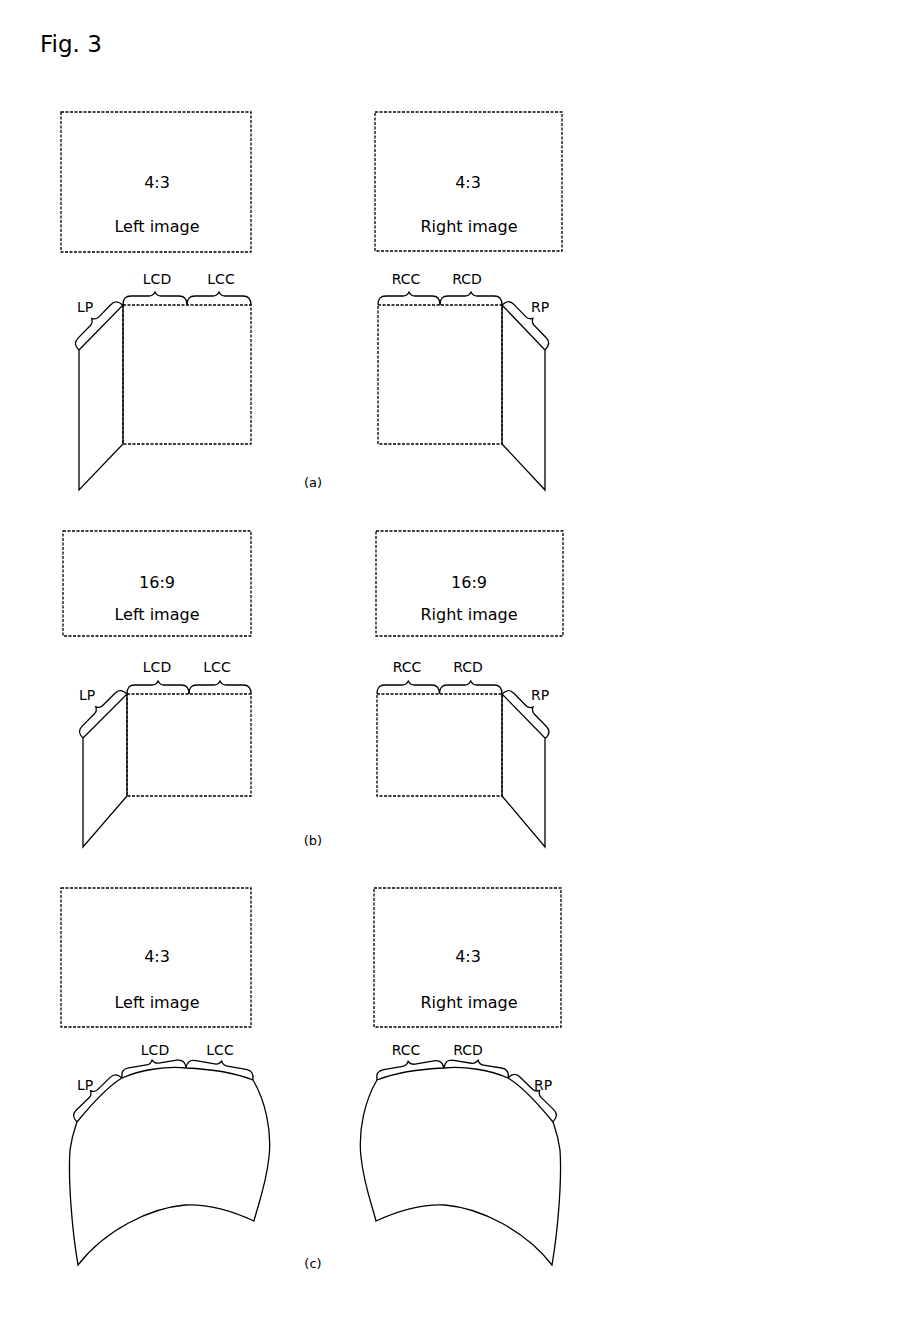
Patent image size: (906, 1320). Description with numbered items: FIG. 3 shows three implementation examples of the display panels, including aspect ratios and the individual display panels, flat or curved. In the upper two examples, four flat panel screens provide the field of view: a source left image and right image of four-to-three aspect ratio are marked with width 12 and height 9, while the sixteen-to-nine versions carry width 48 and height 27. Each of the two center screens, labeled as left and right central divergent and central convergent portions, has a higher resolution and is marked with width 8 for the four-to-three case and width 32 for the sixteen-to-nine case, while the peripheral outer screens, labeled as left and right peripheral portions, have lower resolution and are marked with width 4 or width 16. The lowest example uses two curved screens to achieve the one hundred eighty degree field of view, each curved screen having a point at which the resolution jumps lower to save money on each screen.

The 4:3 source image width 12 is at (311, 558).
The image/screen height 9 is at (308, 683).
The central screen portion width 8 is at (341, 374).
The peripheral screen portion width 4 is at (314, 785).
The 16:9 source image width 48 is at (313, 570).
The 16:9 image/screen height 27 is at (304, 710).
The 16:9 central screen portion width 32 is at (341, 745).
The 16:9 peripheral screen portion width 16 is at (318, 770).